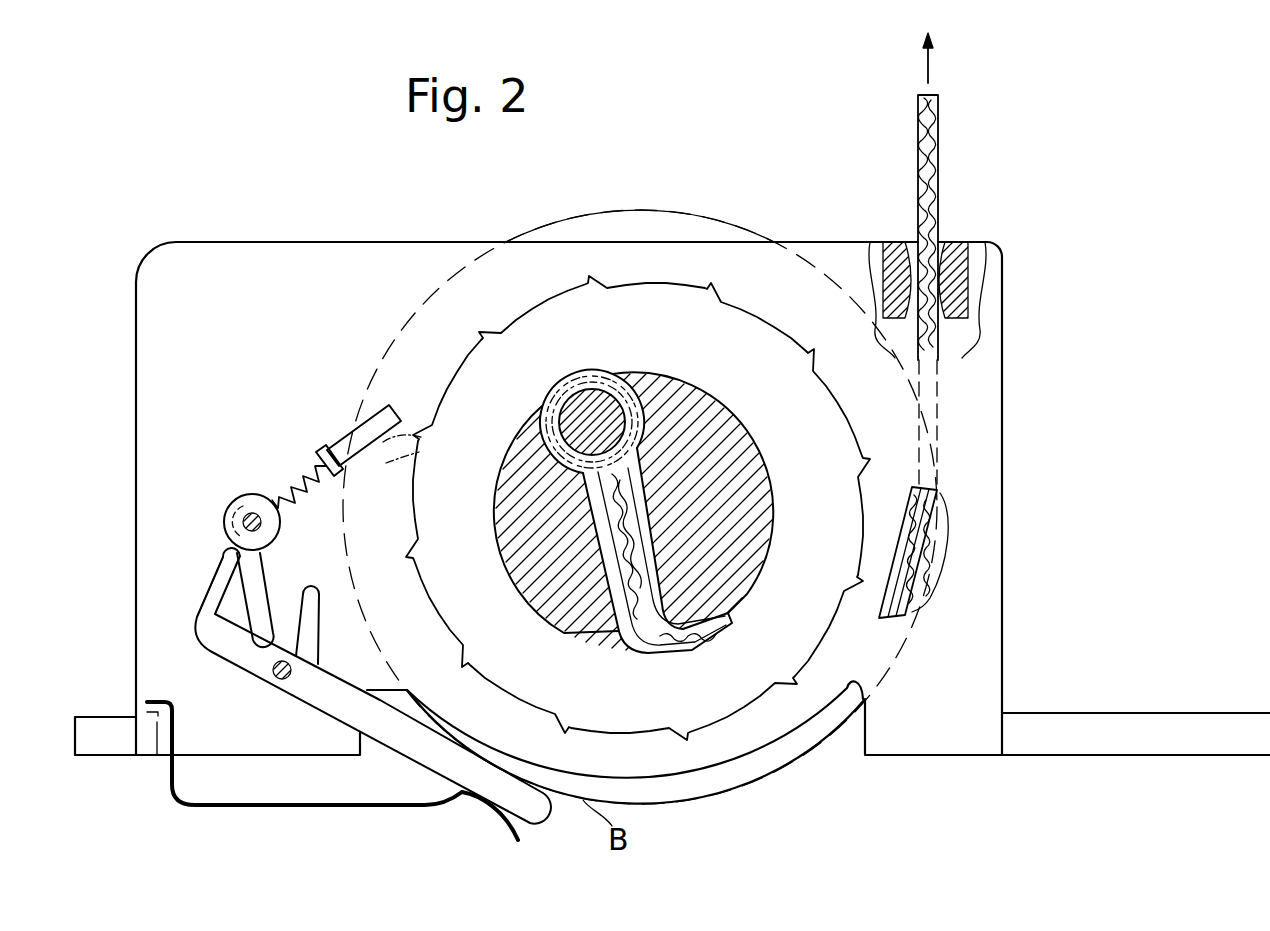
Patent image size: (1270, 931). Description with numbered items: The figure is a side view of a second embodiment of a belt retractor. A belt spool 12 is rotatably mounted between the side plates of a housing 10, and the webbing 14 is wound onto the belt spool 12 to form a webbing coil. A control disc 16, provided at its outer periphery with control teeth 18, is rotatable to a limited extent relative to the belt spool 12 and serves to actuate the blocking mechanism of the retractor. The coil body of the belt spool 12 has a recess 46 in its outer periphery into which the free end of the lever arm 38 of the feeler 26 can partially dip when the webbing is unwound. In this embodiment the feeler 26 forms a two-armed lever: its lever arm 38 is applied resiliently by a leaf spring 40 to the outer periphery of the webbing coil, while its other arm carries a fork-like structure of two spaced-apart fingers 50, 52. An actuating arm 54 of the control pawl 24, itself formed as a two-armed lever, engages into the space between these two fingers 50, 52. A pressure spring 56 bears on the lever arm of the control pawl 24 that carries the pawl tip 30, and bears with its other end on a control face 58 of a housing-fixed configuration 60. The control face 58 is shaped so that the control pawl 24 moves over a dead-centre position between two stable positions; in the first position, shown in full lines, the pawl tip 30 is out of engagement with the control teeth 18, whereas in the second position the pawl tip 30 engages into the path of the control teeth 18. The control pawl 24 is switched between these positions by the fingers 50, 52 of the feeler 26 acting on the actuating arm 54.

The housing 10 is at (983, 528).
The belt spool 12 is at (752, 492).
The webbing 14 is at (937, 180).
The control disc 16 is at (762, 345).
The control teeth 18 is at (885, 628).
The control pawl 24 is at (343, 440).
The feeler 26 is at (308, 706).
The pawl tip 30 is at (398, 412).
The lever arm 38 is at (570, 650).
The leaf spring 40 is at (270, 808).
The recess 46 is at (594, 662).
The finger 50 is at (220, 578).
The finger 52 is at (319, 594).
The actuating arm 54 is at (250, 603).
The pressure spring 56 is at (293, 503).
The control face 58 is at (267, 487).
The housing-fixed configuration 60 is at (219, 503).